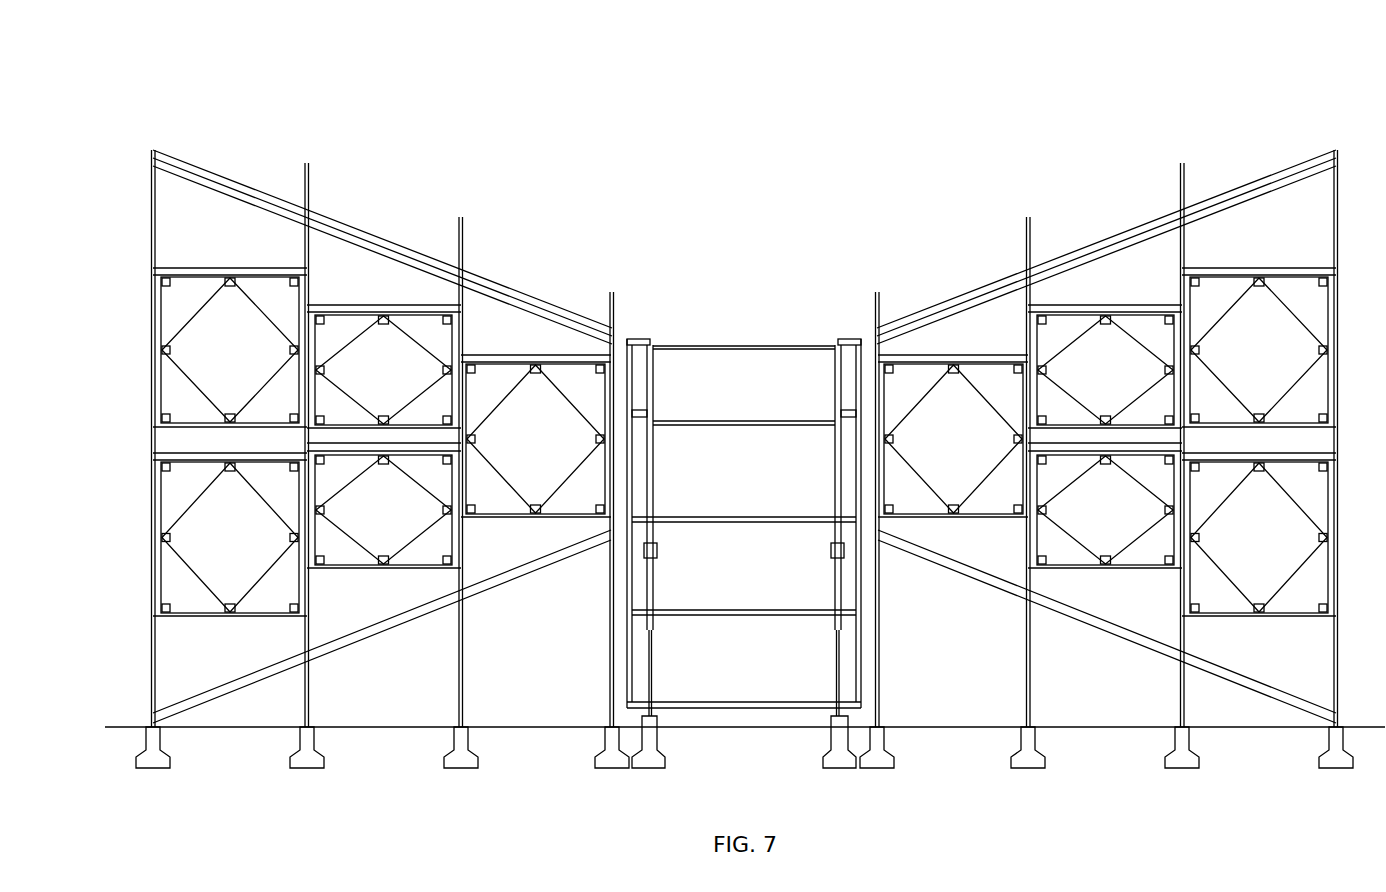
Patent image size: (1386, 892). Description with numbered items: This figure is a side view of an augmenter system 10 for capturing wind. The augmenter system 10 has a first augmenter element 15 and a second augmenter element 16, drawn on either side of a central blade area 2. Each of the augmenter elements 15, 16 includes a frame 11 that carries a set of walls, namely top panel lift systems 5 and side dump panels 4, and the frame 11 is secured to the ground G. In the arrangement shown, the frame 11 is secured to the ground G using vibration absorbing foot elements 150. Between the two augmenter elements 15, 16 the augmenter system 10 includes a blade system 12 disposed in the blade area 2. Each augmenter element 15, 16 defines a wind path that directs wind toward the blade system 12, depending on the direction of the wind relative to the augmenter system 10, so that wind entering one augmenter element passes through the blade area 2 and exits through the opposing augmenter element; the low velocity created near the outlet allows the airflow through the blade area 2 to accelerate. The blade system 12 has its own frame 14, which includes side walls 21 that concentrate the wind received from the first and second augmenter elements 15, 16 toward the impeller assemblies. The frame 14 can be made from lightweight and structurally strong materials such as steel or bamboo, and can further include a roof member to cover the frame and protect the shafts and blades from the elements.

The augmenter system 10 is at (985, 92).
The first augmenter element 15 is at (462, 136).
The second augmenter element 16 is at (1041, 198).
The top panel lift systems 5 is at (373, 237).
The side dump panels 4 is at (530, 336).
The frame 11 is at (615, 292).
The blade system 12 is at (767, 271).
The frame 14 is at (653, 338).
The side walls 21 is at (763, 347).
The ground G is at (547, 721).
The blade area 2 is at (712, 762).
The vibration absorbing foot elements 150 is at (455, 769).